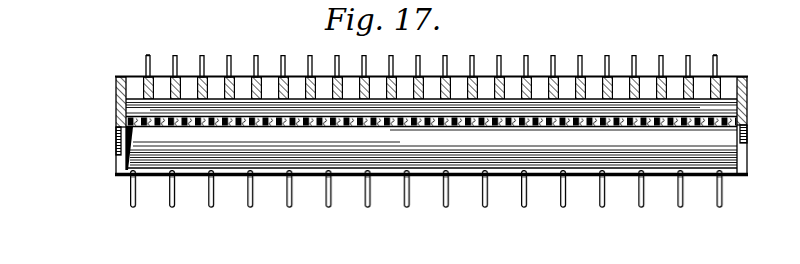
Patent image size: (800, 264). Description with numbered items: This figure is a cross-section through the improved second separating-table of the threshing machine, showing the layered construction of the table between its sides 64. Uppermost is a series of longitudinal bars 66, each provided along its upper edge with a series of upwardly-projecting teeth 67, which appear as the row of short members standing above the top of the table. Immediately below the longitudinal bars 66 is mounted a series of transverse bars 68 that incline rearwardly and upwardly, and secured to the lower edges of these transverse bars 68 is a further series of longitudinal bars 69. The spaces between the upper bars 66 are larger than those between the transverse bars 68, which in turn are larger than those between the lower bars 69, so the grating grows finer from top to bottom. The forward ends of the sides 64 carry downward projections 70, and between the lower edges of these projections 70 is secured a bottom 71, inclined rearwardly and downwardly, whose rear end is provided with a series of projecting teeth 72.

The sides 64 is at (117, 91).
The longitudinal bars 66 is at (224, 77).
The upwardly-projecting teeth 67 is at (261, 57).
The transverse rearwardly and upwardly inclined bars 68 is at (117, 113).
The longitudinal bars 69 is at (308, 125).
The downward projections 70 is at (117, 149).
The bottom 71 is at (308, 173).
The projecting teeth 72 is at (408, 207).